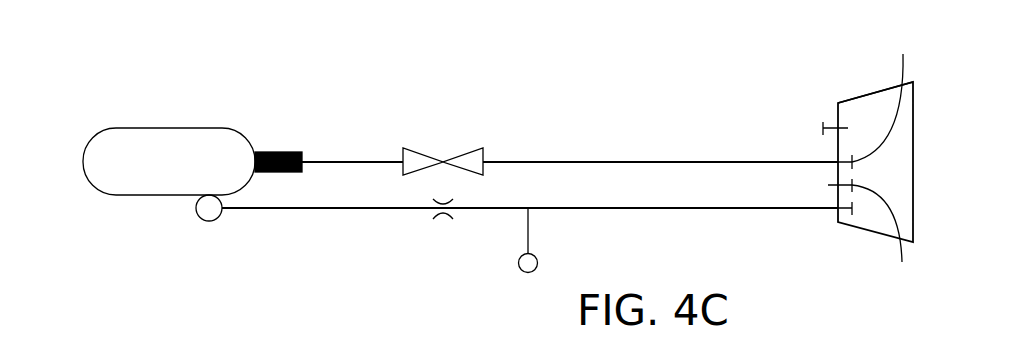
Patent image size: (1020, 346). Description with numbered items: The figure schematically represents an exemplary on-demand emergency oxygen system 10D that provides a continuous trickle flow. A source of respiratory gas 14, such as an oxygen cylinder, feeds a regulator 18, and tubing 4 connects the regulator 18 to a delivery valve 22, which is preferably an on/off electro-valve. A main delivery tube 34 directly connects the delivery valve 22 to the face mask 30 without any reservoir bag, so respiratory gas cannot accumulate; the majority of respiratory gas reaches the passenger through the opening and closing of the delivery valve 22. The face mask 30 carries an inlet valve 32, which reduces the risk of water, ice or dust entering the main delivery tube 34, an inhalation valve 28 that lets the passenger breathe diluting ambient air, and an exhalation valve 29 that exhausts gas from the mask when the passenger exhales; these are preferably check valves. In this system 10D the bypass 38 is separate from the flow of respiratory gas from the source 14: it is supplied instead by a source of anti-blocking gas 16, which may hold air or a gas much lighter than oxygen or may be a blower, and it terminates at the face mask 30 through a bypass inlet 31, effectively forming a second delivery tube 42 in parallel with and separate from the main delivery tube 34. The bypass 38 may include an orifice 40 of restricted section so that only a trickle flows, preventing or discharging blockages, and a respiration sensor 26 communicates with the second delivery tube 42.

The system 10D is at (134, 100).
The source of respiratory gas 14 is at (193, 127).
The regulator 18 is at (278, 150).
The tubing 4 is at (342, 160).
The delivery valve 22 is at (435, 142).
The delivery tube 34 is at (638, 160).
The source of anti-blocking gas 16 is at (203, 223).
The bypass 38 is at (347, 222).
The orifice 40 is at (437, 223).
The second delivery tube 42 is at (695, 210).
The respiration sensor 26 is at (522, 236).
The inhalation valve 28 is at (878, 192).
The face mask 30 is at (870, 92).
The inlet valve 32 is at (885, 96).
The exhalation valve 29 is at (822, 127).
The bypass inlet 31 is at (853, 215).